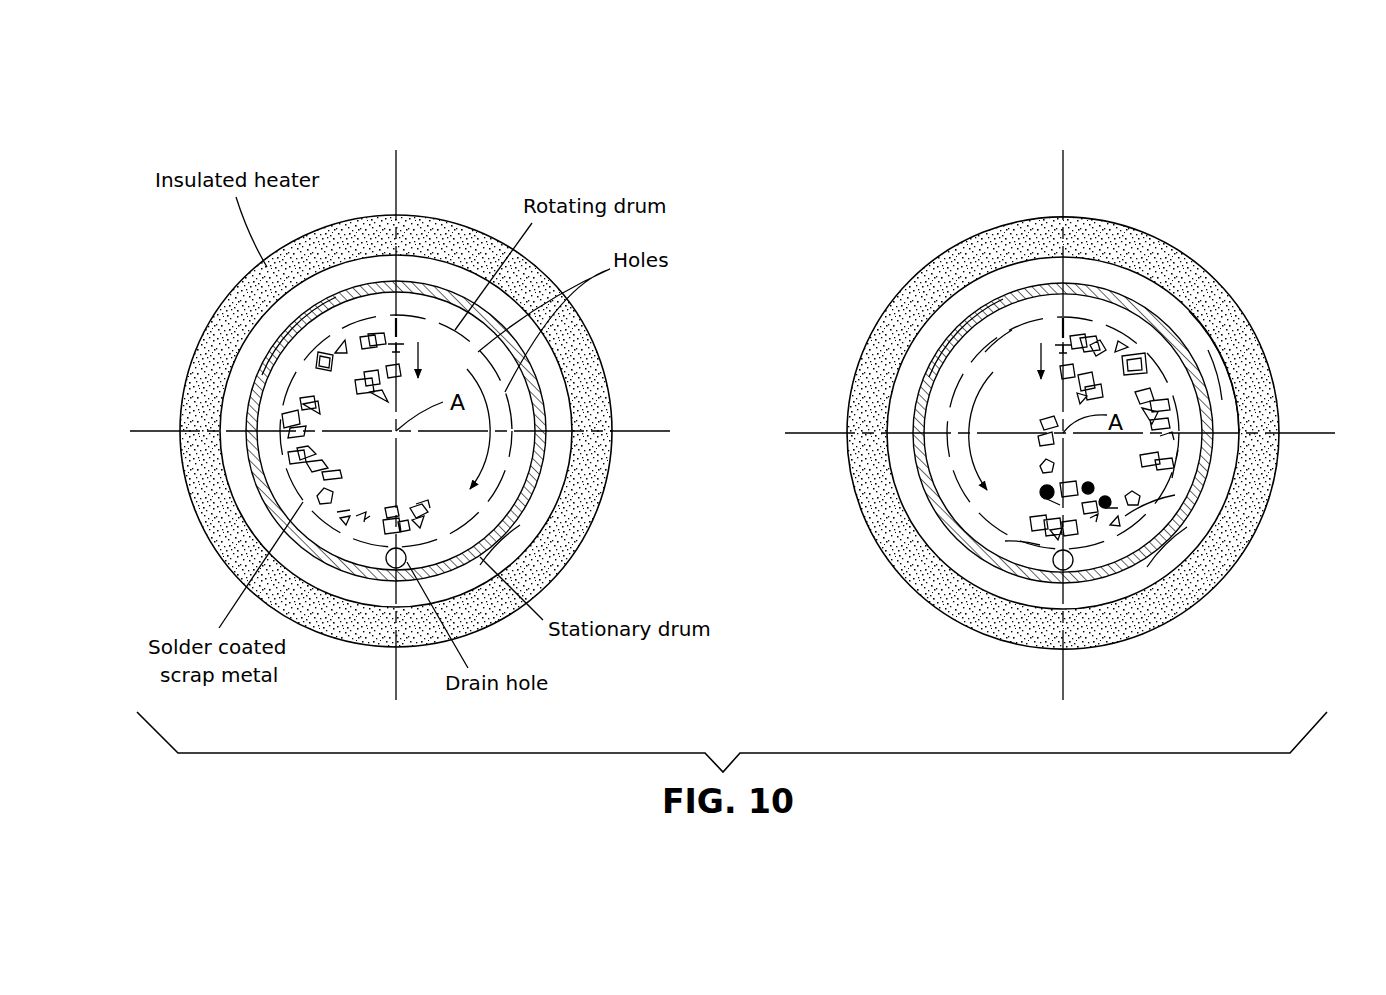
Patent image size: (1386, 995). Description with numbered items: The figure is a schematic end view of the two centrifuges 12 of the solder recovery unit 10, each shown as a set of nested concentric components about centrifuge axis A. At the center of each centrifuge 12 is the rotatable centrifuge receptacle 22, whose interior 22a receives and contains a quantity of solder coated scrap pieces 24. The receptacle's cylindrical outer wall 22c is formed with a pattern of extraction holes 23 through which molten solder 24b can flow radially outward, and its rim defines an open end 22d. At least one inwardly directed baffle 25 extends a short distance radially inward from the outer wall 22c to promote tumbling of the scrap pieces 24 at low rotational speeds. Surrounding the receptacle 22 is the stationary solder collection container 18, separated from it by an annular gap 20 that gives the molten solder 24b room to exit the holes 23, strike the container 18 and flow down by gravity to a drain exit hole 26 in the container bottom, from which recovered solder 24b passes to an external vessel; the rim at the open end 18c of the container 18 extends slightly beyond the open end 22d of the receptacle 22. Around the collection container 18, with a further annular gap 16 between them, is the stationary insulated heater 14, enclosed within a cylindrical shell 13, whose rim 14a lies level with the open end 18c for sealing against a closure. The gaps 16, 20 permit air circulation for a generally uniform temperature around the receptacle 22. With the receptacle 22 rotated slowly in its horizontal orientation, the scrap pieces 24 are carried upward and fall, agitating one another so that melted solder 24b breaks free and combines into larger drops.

The solder recovery unit 10 is at (818, 128).
The centrifuge 12 is at (448, 190).
The shell 13 is at (1163, 242).
The insulated heater 14 is at (1265, 331).
The rim 14a is at (1205, 280).
The annular gap 16 is at (1208, 350).
The solder collection container 18 is at (979, 433).
The open end 18c is at (917, 473).
The annular gap 20 is at (1167, 505).
The centrifuge receptacle 22 is at (942, 603).
The interior 22a is at (997, 355).
The outer wall 22c is at (942, 603).
The open end 22d is at (1022, 538).
The holes 23 is at (948, 402).
The scrap pieces 24 is at (1060, 400).
The molten solder 24b is at (1090, 486).
The baffle 25 is at (1060, 328).
The drain exit hole 26 is at (1075, 565).